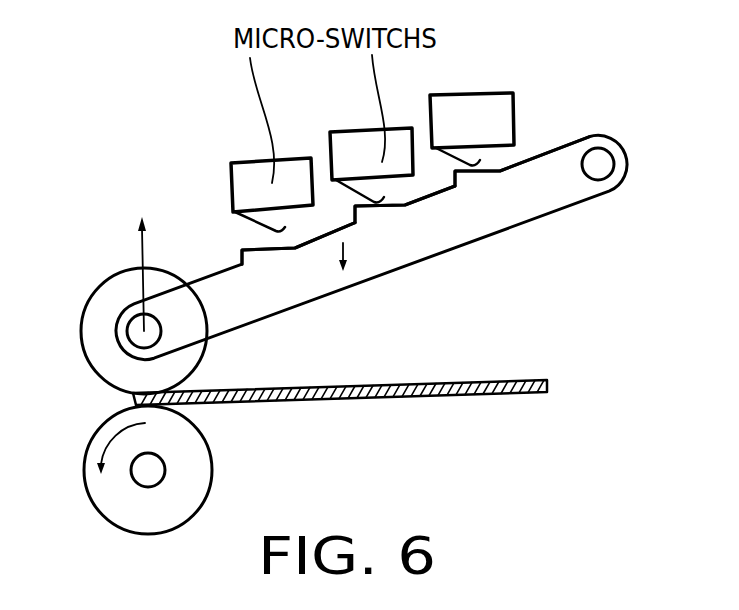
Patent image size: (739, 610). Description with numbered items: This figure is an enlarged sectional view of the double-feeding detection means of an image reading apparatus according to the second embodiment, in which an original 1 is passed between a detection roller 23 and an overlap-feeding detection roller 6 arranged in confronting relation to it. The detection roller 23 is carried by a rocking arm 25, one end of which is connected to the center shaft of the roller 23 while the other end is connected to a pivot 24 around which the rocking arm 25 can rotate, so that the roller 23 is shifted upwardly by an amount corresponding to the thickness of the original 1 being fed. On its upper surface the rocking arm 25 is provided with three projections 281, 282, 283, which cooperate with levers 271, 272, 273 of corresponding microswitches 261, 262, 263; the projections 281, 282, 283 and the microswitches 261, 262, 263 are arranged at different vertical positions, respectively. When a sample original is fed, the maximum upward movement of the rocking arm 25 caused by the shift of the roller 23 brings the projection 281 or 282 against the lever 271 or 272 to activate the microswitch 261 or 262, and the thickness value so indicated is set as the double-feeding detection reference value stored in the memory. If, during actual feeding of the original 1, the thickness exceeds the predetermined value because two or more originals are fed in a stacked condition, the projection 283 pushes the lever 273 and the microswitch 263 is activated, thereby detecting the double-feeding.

The original 1 is at (442, 397).
The overlap-feeding detection roller 6 is at (105, 497).
The detection roller 23 is at (97, 297).
The pivot 24 is at (603, 162).
The rocking arm 25 is at (560, 165).
The microswitch 261 is at (453, 112).
The microswitch 262 is at (359, 131).
The microswitch 263 is at (266, 160).
The lever 271 is at (443, 158).
The lever 272 is at (345, 192).
The lever 273 is at (247, 222).
The projection 281 is at (463, 180).
The projection 282 is at (367, 213).
The projection 283 is at (252, 258).